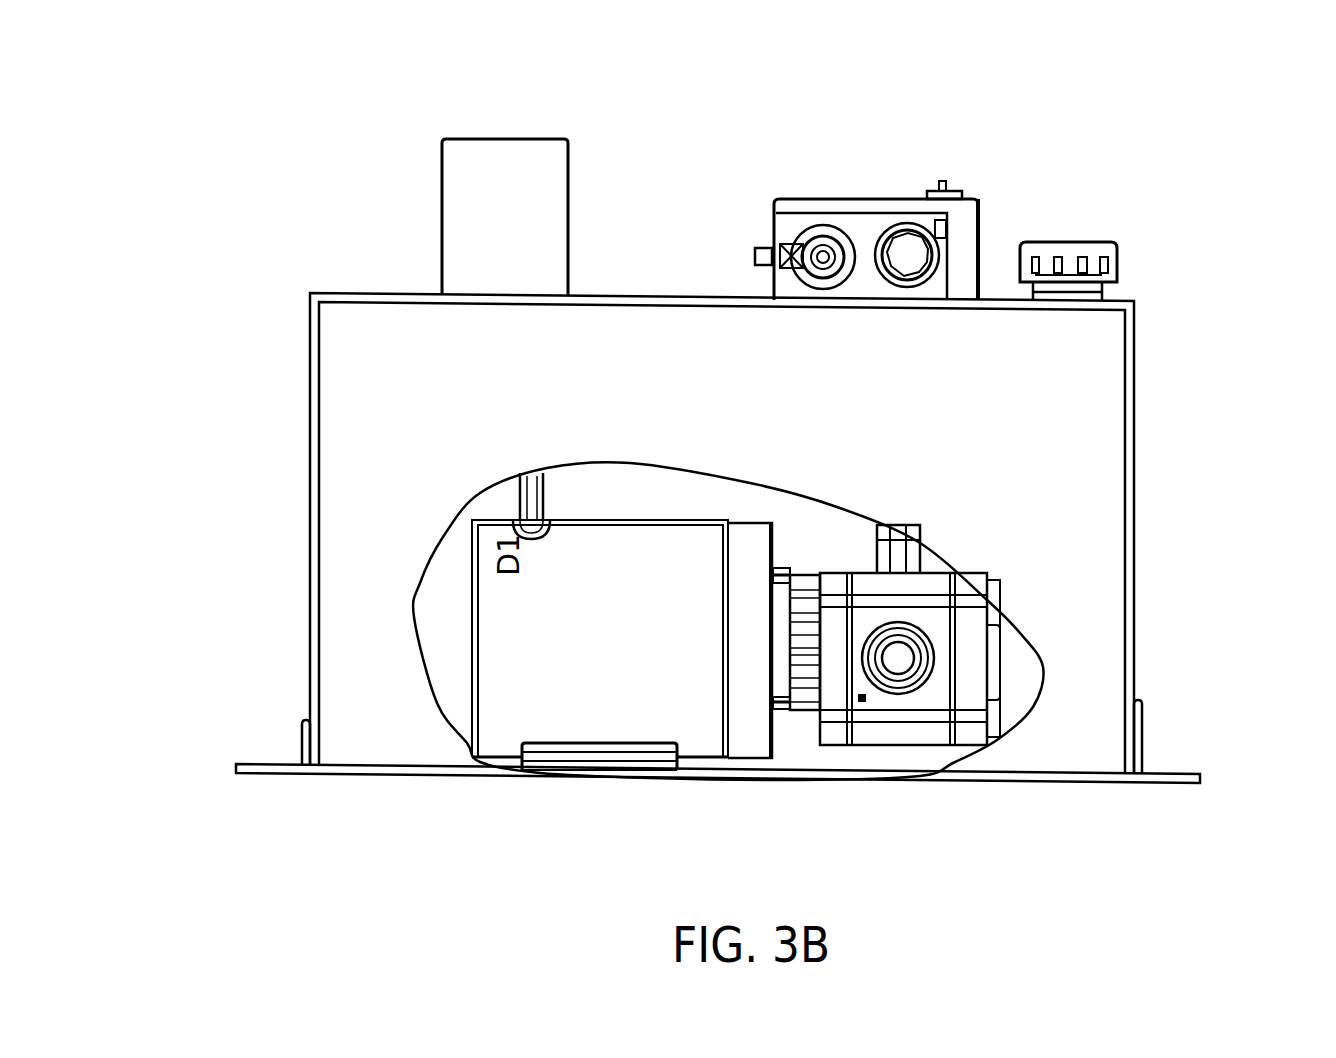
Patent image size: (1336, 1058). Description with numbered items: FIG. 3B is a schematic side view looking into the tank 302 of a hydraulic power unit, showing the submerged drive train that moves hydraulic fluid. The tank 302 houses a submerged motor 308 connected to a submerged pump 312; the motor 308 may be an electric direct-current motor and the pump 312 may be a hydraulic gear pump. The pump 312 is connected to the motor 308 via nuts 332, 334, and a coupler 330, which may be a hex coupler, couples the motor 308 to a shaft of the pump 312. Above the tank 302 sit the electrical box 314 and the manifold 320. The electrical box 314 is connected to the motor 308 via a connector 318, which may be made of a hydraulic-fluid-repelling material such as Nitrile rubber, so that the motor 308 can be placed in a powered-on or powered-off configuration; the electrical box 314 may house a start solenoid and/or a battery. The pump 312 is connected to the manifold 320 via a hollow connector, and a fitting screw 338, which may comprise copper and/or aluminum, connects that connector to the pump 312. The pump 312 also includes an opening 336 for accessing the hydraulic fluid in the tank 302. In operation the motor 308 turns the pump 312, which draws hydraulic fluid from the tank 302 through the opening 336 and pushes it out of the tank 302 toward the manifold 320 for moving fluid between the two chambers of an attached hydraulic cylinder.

The tank 302 is at (298, 320).
The motor 308 is at (489, 763).
The pump 312 is at (1008, 637).
The electrical box 314 is at (435, 195).
The connector 318 is at (520, 500).
The manifold 320 is at (890, 180).
The coupler 330 is at (810, 637).
The nut 332 is at (808, 588).
The nut 334 is at (806, 687).
The opening 336 is at (898, 663).
The fitting screw 338 is at (925, 550).